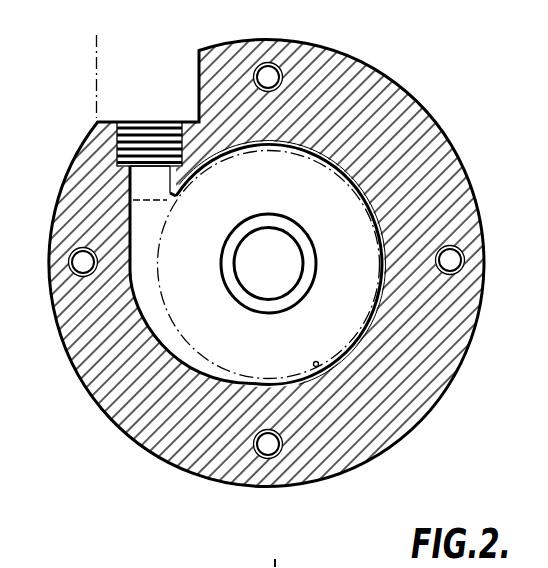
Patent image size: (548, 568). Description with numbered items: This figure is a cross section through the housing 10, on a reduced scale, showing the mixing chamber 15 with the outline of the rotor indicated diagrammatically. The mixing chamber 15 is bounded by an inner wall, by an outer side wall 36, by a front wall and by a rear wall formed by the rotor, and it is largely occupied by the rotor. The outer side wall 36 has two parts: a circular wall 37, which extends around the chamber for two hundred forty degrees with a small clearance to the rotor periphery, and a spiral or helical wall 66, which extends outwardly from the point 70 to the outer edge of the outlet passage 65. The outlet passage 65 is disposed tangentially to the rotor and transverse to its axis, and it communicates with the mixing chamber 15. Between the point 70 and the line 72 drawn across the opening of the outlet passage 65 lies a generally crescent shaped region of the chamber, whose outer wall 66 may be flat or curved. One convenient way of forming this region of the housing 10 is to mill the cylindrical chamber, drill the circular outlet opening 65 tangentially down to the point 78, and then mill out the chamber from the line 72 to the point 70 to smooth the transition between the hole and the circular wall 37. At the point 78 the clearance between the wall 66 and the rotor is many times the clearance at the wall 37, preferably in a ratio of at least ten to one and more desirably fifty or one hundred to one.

The pump housing flange 10 is at (455, 372).
The mixing chamber 15 is at (158, 328).
The chamber liner ring 36 is at (369, 319).
The circular wall 37 is at (318, 367).
The outlet passage 65 is at (117, 147).
The spiral wall 66 is at (138, 209).
The point 70 is at (267, 378).
The line 72 is at (137, 195).
The point 78 is at (133, 296).